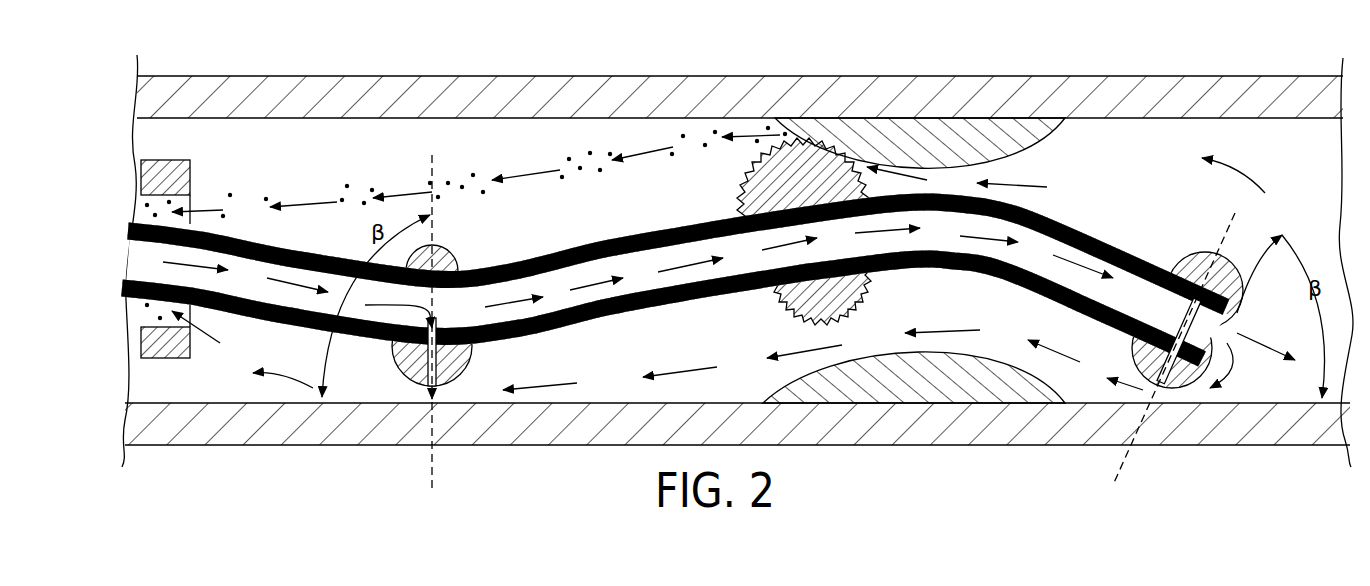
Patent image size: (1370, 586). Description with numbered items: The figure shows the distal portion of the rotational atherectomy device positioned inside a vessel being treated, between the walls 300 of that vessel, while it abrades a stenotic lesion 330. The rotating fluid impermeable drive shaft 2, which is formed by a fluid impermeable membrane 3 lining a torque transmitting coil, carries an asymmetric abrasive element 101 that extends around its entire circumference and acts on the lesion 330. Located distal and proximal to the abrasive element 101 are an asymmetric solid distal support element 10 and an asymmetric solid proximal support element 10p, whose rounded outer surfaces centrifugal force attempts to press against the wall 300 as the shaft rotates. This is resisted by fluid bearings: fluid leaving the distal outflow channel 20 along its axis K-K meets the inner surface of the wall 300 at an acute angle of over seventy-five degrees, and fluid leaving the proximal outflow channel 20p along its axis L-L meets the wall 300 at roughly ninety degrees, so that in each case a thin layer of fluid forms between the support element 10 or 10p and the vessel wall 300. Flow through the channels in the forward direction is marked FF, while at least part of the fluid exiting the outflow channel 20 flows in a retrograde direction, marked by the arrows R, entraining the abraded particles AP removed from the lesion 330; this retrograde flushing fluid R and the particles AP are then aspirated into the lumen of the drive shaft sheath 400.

The drive shaft sheath 400 is at (157, 150).
The wall of the treated vessel 300 is at (340, 92).
The stenotic lesion 330 is at (938, 145).
The asymmetric abrasive element 101 is at (744, 157).
The drive shaft 2 is at (528, 259).
The fluid impermeable membrane 3 is at (624, 259).
The asymmetric solid proximal support element 10p is at (398, 374).
The outflow channel 20p is at (452, 358).
The asymmetric solid distal support element 10 is at (1123, 361).
The outflow channel 20 is at (1157, 353).
The abraded particles AP is at (575, 155).
The feed flow direction FF is at (651, 267).
The retrograde direction R is at (1157, 165).
The axis L- L is at (430, 165).
The axis K- K is at (1223, 245).